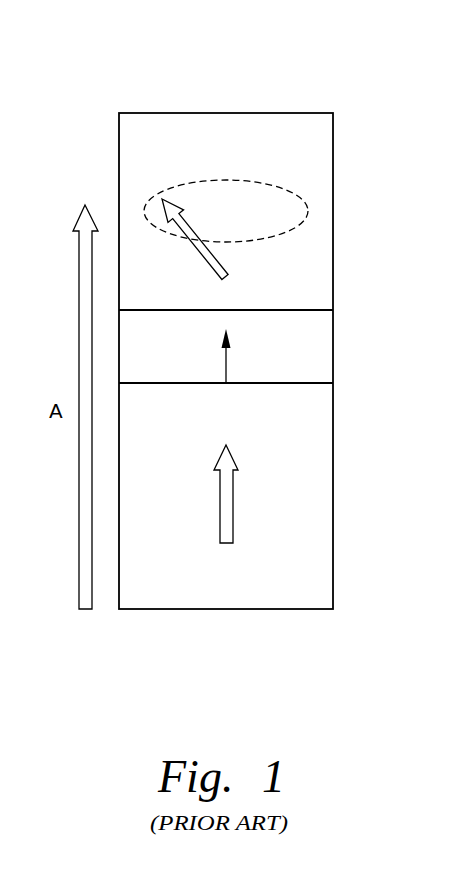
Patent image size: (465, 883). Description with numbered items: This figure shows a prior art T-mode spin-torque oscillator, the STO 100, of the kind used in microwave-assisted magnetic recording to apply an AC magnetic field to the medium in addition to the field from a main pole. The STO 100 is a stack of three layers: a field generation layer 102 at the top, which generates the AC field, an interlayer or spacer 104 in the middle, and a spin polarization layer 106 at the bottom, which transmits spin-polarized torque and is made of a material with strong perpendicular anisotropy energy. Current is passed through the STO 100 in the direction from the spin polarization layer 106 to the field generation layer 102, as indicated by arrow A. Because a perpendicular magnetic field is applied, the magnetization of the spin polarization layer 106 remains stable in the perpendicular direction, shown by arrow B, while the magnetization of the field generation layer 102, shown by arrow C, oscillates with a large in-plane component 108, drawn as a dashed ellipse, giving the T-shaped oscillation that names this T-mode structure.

The spin-torque oscillator 100 is at (123, 43).
The field generation layer 102 is at (325, 207).
The interlayer 104 is at (325, 347).
The spin polarization layer 106 is at (325, 496).
The in-plane component 108 is at (224, 178).